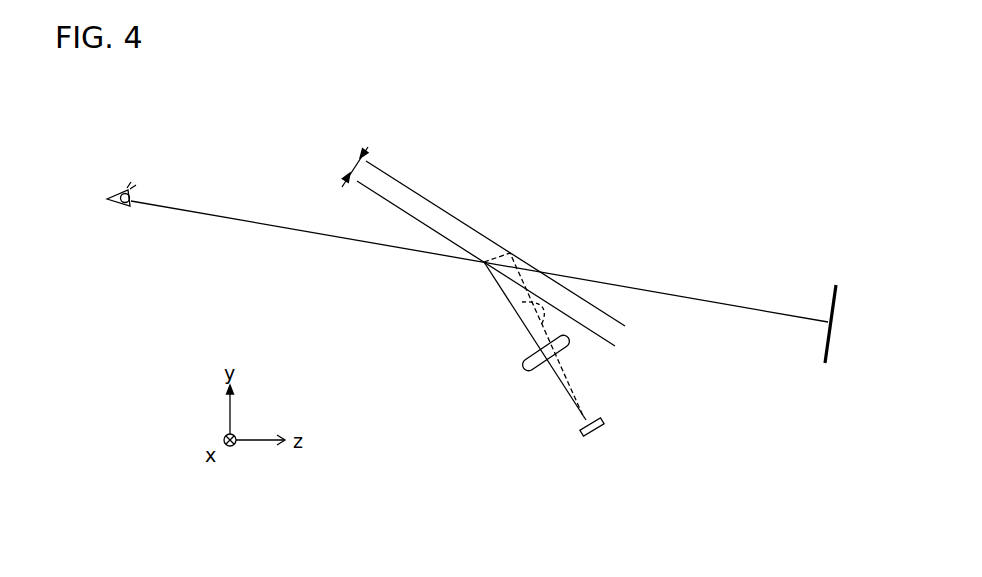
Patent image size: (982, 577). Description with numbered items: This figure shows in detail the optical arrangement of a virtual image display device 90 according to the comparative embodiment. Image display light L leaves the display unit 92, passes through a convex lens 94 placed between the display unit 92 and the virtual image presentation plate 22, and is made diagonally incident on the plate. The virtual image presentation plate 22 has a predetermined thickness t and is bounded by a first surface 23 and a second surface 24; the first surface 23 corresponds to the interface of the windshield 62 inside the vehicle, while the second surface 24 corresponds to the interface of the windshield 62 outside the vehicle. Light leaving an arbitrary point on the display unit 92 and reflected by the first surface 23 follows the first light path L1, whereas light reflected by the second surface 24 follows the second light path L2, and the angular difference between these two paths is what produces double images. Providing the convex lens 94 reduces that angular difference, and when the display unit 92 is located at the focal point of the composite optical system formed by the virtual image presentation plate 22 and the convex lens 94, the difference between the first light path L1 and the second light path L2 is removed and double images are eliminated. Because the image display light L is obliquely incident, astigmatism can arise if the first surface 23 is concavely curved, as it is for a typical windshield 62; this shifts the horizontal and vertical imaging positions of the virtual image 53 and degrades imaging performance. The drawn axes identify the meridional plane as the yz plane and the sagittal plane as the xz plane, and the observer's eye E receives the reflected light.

The virtual image presentation plate 22 is at (465, 223).
The windshield 62 is at (465, 223).
The first surface 23 is at (377, 192).
The second surface 24 is at (410, 188).
The thickness t is at (358, 158).
The eye of observer E is at (121, 194).
The virtual image 53 is at (843, 258).
The virtual image display device 90 is at (520, 344).
The display unit 92 is at (606, 424).
The convex lens 94 is at (523, 366).
The image display light L is at (532, 401).
The first light path L1 is at (527, 331).
The second light path L2 is at (522, 302).